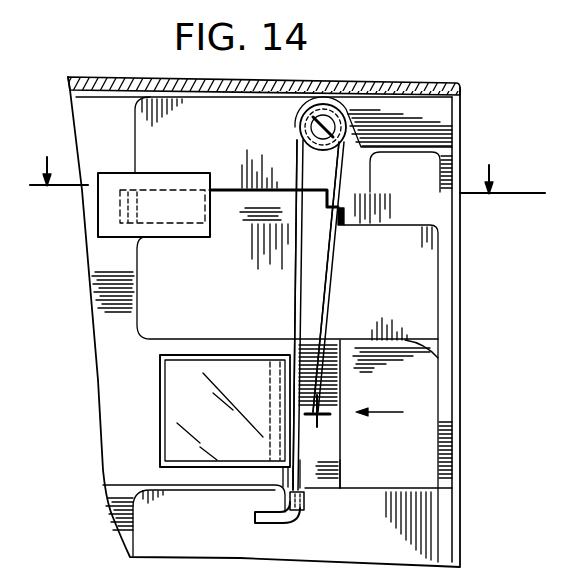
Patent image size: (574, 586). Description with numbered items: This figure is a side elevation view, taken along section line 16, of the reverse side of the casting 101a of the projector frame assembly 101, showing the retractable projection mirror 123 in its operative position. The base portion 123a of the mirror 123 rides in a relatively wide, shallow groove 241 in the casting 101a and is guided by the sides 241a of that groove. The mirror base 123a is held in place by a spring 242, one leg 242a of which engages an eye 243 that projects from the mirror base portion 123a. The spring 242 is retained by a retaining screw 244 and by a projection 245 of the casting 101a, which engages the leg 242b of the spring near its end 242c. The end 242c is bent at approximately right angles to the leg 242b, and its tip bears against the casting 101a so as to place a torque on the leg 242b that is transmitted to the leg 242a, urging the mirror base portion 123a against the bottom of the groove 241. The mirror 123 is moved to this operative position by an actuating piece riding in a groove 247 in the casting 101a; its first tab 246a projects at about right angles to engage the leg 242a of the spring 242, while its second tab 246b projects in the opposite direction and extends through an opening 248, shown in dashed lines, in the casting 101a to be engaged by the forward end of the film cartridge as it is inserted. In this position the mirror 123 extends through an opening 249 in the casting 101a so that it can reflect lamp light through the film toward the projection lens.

The section line 16- 16 is at (287, 163).
The projector frame assembly 101 is at (461, 305).
The casting 101a is at (443, 470).
The retractable projection mirror 123 is at (191, 449).
The mirror base portion 123a is at (317, 461).
The groove 241 is at (417, 407).
The sides of groove 241a is at (438, 356).
The spring 242 is at (333, 272).
The leg of spring 242a is at (328, 305).
The leg of spring 242b is at (294, 292).
The end of spring 242c is at (276, 531).
The eye 243 is at (330, 416).
The retaining screw 244 is at (305, 130).
The projection 245 is at (307, 505).
The first tab 246a is at (345, 218).
The second tab 246b is at (100, 222).
The groove 247 is at (377, 163).
The opening 248 is at (243, 193).
The opening 249 is at (160, 405).